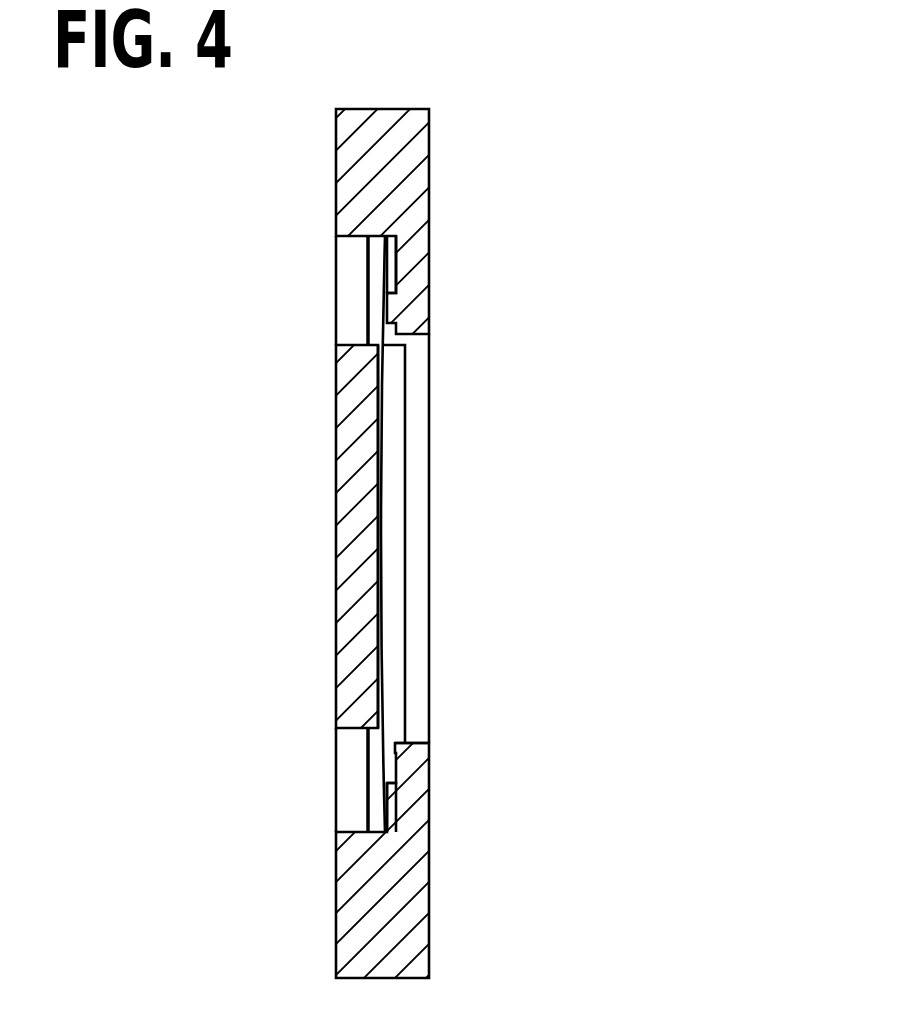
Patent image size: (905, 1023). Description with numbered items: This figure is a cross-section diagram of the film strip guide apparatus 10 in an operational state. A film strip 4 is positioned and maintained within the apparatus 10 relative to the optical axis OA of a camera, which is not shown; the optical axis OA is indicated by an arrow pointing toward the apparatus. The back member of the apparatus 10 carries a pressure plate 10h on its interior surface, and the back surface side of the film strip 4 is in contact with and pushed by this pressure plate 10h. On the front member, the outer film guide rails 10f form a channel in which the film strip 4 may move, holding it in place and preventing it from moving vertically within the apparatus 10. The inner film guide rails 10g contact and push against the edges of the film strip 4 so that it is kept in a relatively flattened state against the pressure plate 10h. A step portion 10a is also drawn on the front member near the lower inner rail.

The film strip guide apparatus 10 is at (385, 158).
The film strip 4 is at (388, 346).
The outer film guide rails 10f is at (378, 242).
The inner film guide rails 10g is at (390, 306).
The pressure plate 10h is at (380, 524).
The step portion 10a is at (404, 743).
The optical axis OA is at (515, 470).